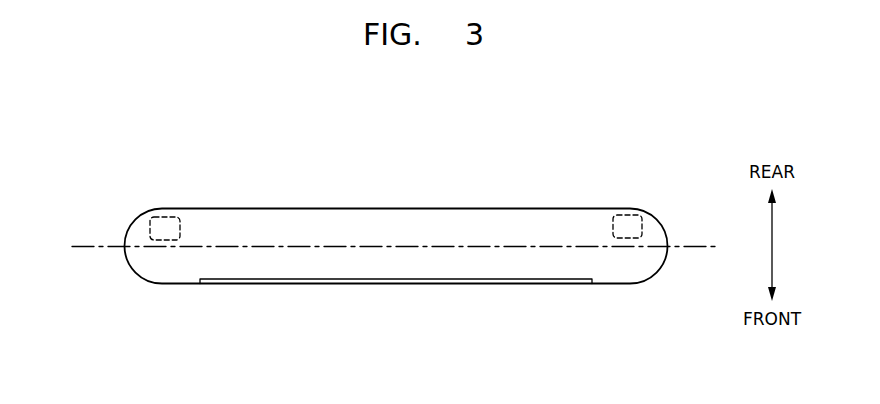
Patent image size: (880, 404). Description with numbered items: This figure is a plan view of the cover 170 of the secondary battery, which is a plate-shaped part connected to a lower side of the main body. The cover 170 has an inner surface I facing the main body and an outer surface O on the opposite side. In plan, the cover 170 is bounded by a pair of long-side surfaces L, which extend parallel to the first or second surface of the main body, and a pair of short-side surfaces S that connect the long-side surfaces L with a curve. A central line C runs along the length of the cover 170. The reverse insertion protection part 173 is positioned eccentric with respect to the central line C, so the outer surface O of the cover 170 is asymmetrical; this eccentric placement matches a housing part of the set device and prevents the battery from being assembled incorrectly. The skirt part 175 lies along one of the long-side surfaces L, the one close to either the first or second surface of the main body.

The cover 170 is at (524, 178).
The reverse insertion protection part 173 is at (628, 215).
The skirt part 175 is at (522, 284).
The central line C is at (395, 247).
The short-side surfaces S is at (125, 235).
The long-side surfaces L is at (278, 208).
The inner surface I is at (397, 218).
The outer surface O is at (397, 284).